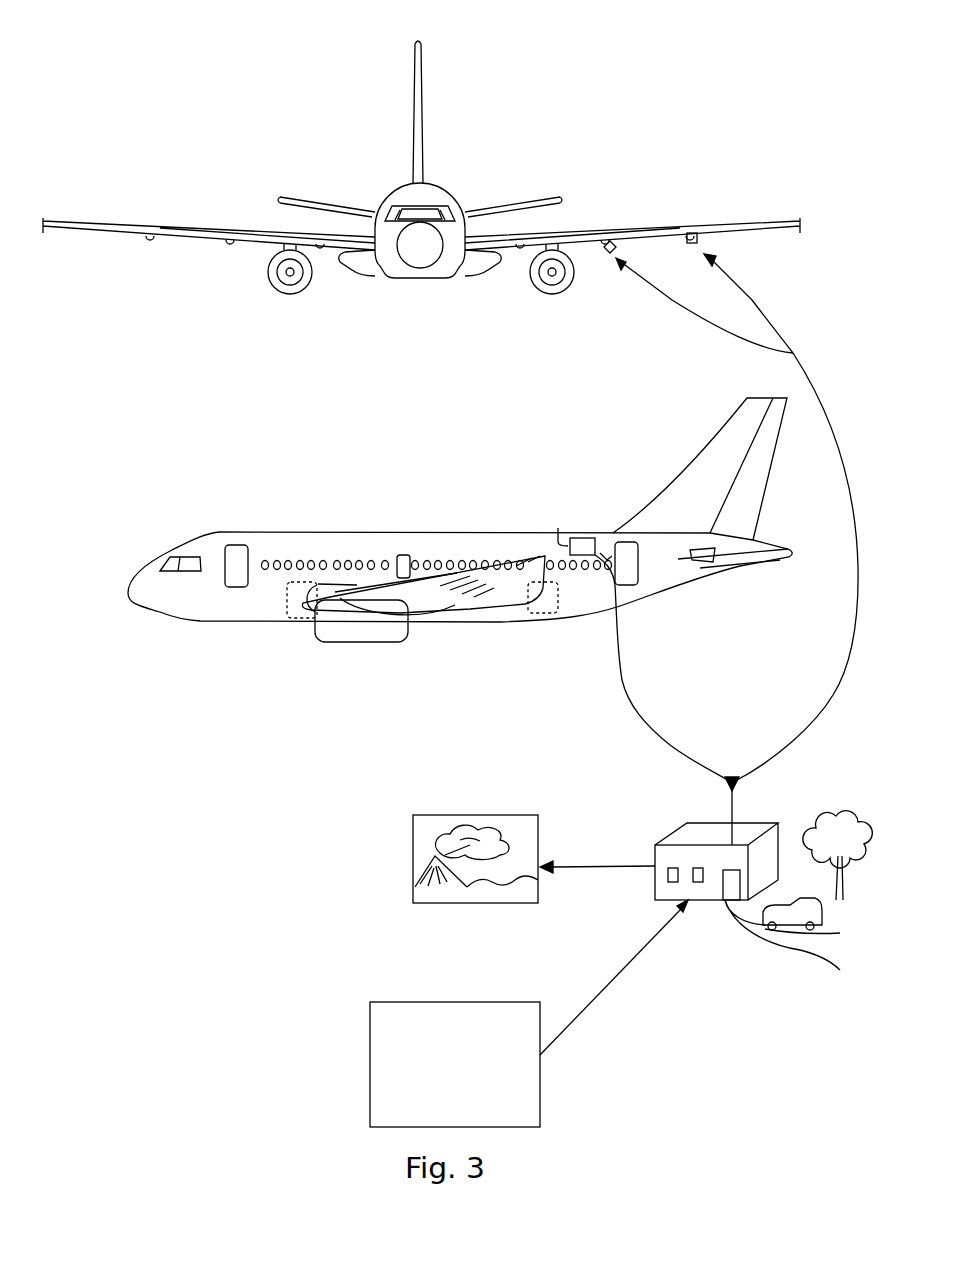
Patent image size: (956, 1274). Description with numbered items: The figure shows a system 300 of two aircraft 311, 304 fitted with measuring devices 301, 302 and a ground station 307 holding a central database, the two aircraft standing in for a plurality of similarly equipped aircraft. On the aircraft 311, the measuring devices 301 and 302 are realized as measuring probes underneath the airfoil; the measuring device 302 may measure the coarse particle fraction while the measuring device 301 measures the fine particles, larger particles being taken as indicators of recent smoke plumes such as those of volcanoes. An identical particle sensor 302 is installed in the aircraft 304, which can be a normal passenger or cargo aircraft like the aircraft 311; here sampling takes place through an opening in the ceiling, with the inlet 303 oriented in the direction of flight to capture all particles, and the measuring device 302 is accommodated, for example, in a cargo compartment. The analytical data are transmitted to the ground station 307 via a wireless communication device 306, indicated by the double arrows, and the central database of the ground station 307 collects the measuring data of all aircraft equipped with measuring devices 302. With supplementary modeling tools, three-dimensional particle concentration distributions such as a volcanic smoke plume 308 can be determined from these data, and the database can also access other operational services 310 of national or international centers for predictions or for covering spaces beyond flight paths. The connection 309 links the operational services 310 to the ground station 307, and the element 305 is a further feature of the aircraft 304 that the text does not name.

The system 300 is at (248, 105).
The aircraft 311 is at (448, 182).
The measuring device 301 is at (604, 252).
The measuring device 302 is at (704, 254).
The inlet 303 is at (558, 528).
The aircraft 304 is at (186, 548).
The sensor mounting 305 is at (607, 560).
The wireless communication device 306 is at (486, 542).
The ground station 307 is at (710, 892).
The volcanic smoke plume 308 is at (534, 843).
The data connection 309 is at (614, 977).
The operational services 310 is at (455, 1064).